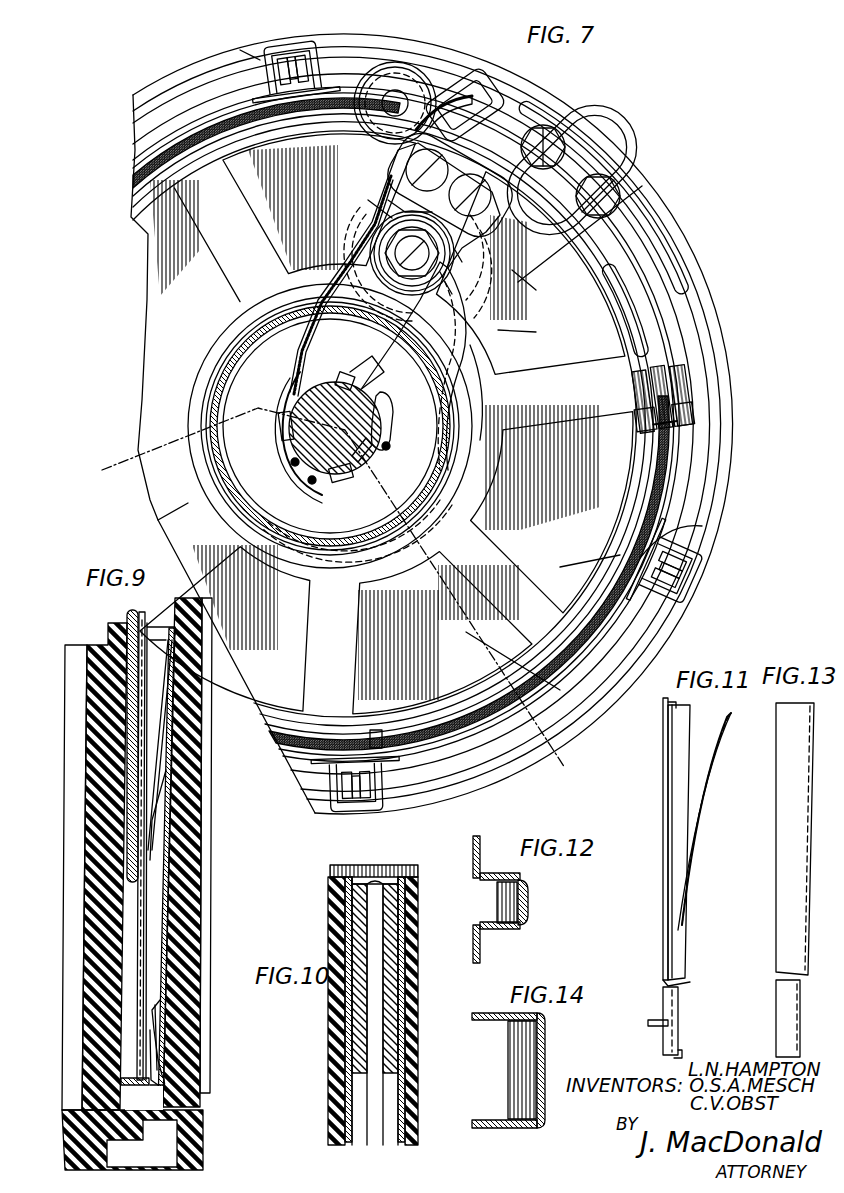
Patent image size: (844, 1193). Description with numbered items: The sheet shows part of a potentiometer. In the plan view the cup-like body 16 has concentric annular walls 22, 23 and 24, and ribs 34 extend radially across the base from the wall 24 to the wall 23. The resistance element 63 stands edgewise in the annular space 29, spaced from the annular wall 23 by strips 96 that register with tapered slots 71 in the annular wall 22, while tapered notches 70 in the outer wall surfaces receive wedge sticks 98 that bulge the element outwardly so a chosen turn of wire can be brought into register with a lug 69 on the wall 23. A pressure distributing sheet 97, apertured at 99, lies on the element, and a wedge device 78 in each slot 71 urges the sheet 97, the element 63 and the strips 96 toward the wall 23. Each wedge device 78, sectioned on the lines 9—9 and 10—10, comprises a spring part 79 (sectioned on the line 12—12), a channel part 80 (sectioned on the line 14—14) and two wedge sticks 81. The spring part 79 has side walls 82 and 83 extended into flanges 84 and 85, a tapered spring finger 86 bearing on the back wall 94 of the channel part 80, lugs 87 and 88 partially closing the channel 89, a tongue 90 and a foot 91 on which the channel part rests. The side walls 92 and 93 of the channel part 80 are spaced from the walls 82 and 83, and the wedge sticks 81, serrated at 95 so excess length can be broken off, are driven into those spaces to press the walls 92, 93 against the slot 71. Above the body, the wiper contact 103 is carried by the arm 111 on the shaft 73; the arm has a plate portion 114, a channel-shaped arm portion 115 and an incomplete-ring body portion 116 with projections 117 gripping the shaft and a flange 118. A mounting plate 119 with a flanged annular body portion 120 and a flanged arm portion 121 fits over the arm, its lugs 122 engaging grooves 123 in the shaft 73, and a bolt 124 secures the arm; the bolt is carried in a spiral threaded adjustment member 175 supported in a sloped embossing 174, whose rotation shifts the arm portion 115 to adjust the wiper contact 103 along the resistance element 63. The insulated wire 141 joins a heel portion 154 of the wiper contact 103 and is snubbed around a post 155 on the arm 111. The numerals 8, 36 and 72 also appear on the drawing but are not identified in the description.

In FIG. 7, the section line 8- 8 is at (105, 470).
In FIG. 7, the section line 9— 9 is at (660, 512).
In FIG. 7, the section line 10— 10 is at (330, 790).
In FIG. 11, the section line 12— 12 is at (712, 925).
In FIG. 13, the section line 14— 14 is at (835, 822).
In FIG. 7, the body 16 is at (378, 232).
In FIG. 7, the annular wall 22 is at (692, 463).
In FIG. 9, the annular wall 22 is at (186, 868).
In FIG. 7, the annular wall 23 is at (637, 465).
In FIG. 9, the annular wall 23 is at (106, 628).
In FIG. 7, the annular wall 24 is at (478, 362).
In FIG. 7, the annular space 29 is at (660, 505).
In FIG. 7, the ribs 34 is at (610, 352).
In FIG. 7, the rim flange 36 is at (718, 489).
In FIG. 7, the resistance element 63 is at (213, 138).
In FIG. 9, the resistance element 63 is at (128, 614).
In FIG. 10, the resistance element 63 is at (332, 870).
In FIG. 7, the lug portions 69 is at (376, 745).
In FIG. 7, the notches 70 is at (556, 680).
In FIG. 7, the slots 71 is at (686, 548).
In FIG. 10, the slots 71 is at (406, 870).
In FIG. 7, the guide 72 is at (258, 56).
In FIG. 7, the shaft 73 is at (372, 426).
In FIG. 7, the wedge device 78 is at (272, 50).
In FIG. 9, the wedge device 78 is at (158, 630).
In FIG. 11, the spring part 79 is at (664, 746).
In FIG. 14, the channel part 80 is at (545, 1050).
In FIG. 13, the channel part 80 is at (818, 714).
In FIG. 7, the wedge sticks 81 is at (684, 571).
In FIG. 10, the wedge sticks 81 is at (347, 898).
In FIG. 10, the side wall 82 is at (392, 1030).
In FIG. 12, the side wall 82 is at (500, 876).
In FIG. 9, the side wall 83 is at (152, 905).
In FIG. 10, the side wall 83 is at (356, 1014).
In FIG. 12, the side wall 83 is at (498, 934).
In FIG. 11, the side wall 83 is at (675, 800).
In FIG. 7, the flange 84 is at (655, 538).
In FIG. 12, the flange 84 is at (482, 852).
In FIG. 7, the flange 85 is at (648, 598).
In FIG. 9, the flange 85 is at (160, 640).
In FIG. 12, the flange 85 is at (484, 946).
In FIG. 11, the flange 85 is at (666, 832).
In FIG. 9, the spring finger portion 86 is at (156, 836).
In FIG. 12, the spring finger portion 86 is at (516, 906).
In FIG. 11, the spring finger portion 86 is at (700, 818).
In FIG. 7, the lug 87 is at (660, 578).
In FIG. 10, the lug 87 is at (392, 882).
In FIG. 7, the lug 88 is at (648, 588).
In FIG. 10, the lug 88 is at (372, 882).
In FIG. 11, the lug 88 is at (674, 704).
In FIG. 12, the channel 89 is at (525, 894).
In FIG. 9, the tongue 90 is at (150, 1068).
In FIG. 11, the tongue 90 is at (656, 1026).
In FIG. 9, the foot 91 is at (158, 1102).
In FIG. 11, the foot 91 is at (682, 1054).
In FIG. 10, the side wall 92 is at (400, 1060).
In FIG. 14, the side wall 92 is at (496, 1020).
In FIG. 9, the side wall 93 is at (158, 695).
In FIG. 10, the side wall 93 is at (332, 1030).
In FIG. 14, the side wall 93 is at (496, 1128).
In FIG. 13, the side wall 93 is at (784, 938).
In FIG. 9, the back wall 94 is at (160, 1036).
In FIG. 14, the back wall 94 is at (544, 1024).
In FIG. 10, the serrations 95 is at (410, 985).
In FIG. 7, the strips 96 is at (398, 750).
In FIG. 7, the pressure distributing sheet 97 is at (656, 520).
In FIG. 9, the pressure distributing sheet 97 is at (142, 616).
In FIG. 7, the wedge sticks 98 is at (520, 690).
In FIG. 9, the aperture 99 is at (150, 1085).
In FIG. 7, the wiper contact 103 is at (660, 428).
In FIG. 7, the arm 111 is at (630, 218).
In FIG. 7, the plate portion 114 is at (534, 118).
In FIG. 7, the arm portion 115 is at (398, 180).
In FIG. 7, the body portion 116 is at (420, 392).
In FIG. 7, the projections 117 is at (372, 392).
In FIG. 7, the flange 118 is at (458, 278).
In FIG. 7, the mounting plate 119 is at (448, 288).
In FIG. 7, the body portion 120 is at (334, 560).
In FIG. 7, the arm portion 121 is at (462, 256).
In FIG. 7, the lugs 122 is at (366, 462).
In FIG. 7, the grooves 123 is at (347, 378).
In FIG. 7, the bolt 124 is at (436, 258).
In FIG. 7, the insulated wire 141 is at (430, 100).
In FIG. 7, the heel portion 154 is at (476, 90).
In FIG. 7, the post 155 is at (397, 90).
In FIG. 7, the sloped embossing 174 is at (412, 305).
In FIG. 7, the spiral threaded adjustment member 175 is at (402, 236).